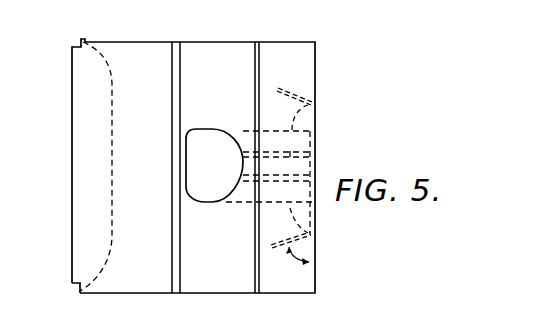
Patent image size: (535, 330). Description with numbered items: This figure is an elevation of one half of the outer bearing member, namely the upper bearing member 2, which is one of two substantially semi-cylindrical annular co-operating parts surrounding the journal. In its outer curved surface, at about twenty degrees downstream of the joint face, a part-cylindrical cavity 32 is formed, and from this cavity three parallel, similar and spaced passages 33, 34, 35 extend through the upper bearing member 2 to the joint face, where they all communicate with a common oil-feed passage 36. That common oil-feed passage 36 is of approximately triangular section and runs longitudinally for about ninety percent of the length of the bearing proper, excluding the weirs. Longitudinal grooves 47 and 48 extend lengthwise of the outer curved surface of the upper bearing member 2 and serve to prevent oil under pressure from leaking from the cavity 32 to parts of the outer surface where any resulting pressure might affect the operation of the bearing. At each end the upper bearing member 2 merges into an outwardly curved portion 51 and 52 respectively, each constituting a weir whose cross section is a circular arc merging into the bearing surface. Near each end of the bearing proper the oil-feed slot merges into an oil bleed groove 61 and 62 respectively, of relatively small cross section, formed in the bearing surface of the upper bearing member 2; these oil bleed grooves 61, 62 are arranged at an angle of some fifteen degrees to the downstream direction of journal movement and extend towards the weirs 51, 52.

The upper bearing member 2 is at (146, 113).
The part-cylindrical cavity 32 is at (205, 150).
The passage 33 is at (274, 143).
The passage 34 is at (312, 165).
The passage 35 is at (273, 188).
The common oil-feed passage 36 is at (313, 116).
The longitudinal groove 47 is at (181, 52).
The longitudinal groove 48 is at (261, 55).
The outwardly curved portion 51 is at (102, 55).
The outwardly curved portion 52 is at (57, 275).
The oil bleed groove 61 is at (303, 95).
The oil bleed groove 62 is at (303, 245).